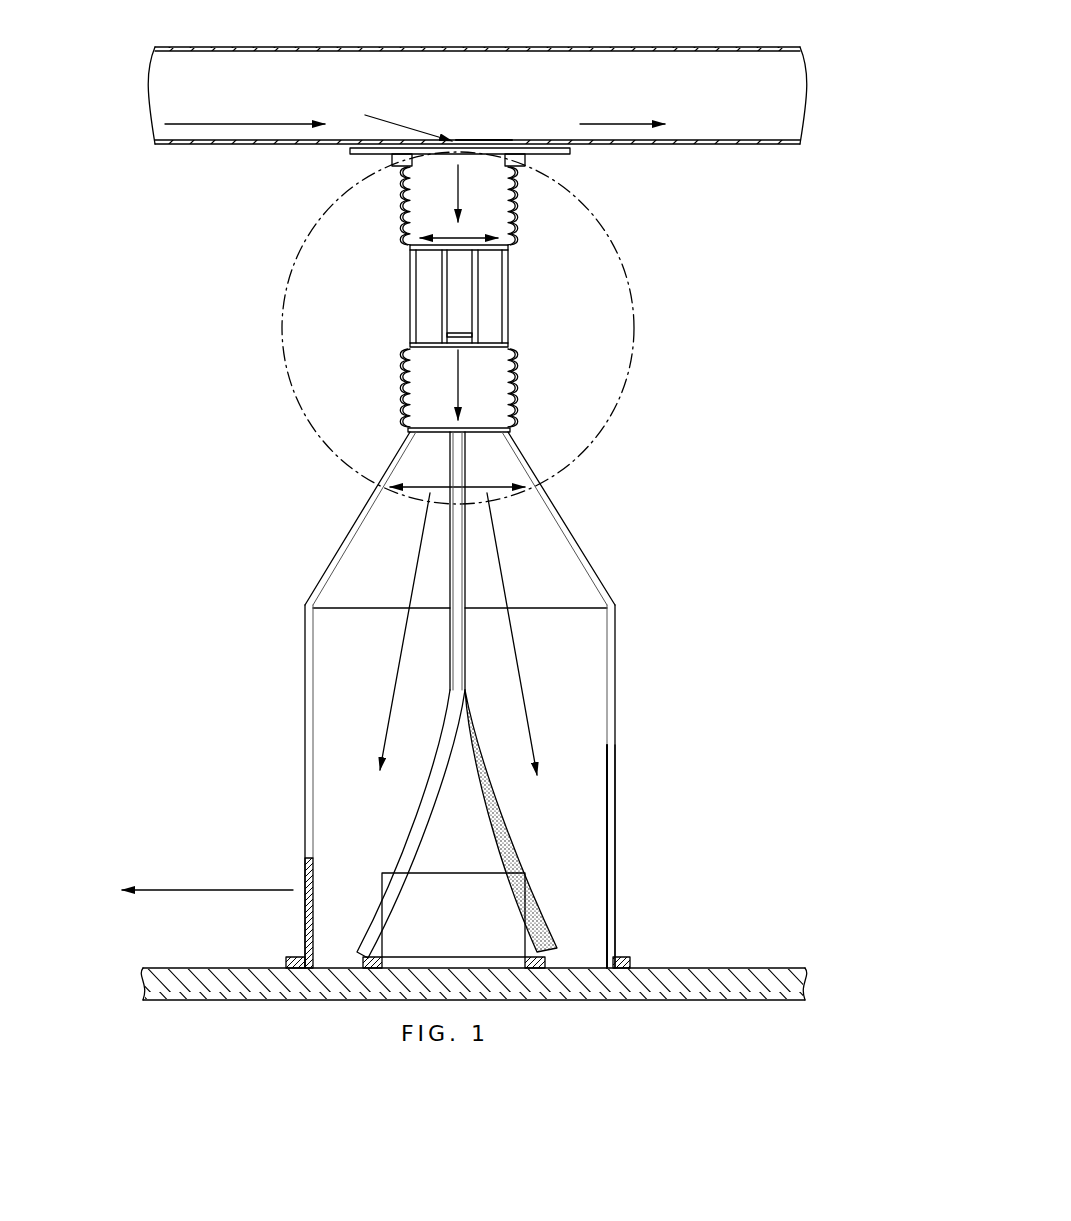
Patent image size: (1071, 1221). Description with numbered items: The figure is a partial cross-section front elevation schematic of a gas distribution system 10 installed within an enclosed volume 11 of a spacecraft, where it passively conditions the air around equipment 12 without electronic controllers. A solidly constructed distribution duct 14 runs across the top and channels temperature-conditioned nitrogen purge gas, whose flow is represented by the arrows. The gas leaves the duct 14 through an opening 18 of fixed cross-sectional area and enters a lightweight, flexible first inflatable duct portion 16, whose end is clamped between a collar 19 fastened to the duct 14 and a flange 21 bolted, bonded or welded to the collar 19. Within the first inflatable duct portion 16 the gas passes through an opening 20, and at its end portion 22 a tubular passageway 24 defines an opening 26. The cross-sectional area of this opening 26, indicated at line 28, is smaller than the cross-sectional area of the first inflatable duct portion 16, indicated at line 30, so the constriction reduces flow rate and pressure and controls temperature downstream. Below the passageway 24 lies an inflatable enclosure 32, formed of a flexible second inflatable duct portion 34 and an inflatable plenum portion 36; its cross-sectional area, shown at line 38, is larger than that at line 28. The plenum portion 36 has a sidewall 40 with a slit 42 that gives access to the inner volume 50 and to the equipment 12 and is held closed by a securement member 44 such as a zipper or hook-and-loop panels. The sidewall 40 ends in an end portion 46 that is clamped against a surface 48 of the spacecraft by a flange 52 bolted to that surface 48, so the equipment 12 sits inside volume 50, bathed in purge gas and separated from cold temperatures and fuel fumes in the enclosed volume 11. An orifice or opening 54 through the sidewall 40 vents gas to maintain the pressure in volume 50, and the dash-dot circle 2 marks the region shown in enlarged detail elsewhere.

The gas distribution system 10 is at (477, 92).
The distribution duct 14 is at (660, 146).
The opening 18 is at (477, 136).
The collar 19 is at (350, 154).
The flange 21 is at (527, 164).
The detail circle (FIG. 2 region) 2 is at (633, 238).
The enclosed volume 11 is at (444, 566).
The first inflatable duct portion 16 is at (407, 218).
The opening 20 is at (481, 201).
The end portion 22 is at (521, 233).
The line 30 is at (462, 237).
The passageway 24 is at (480, 292).
The opening 26 is at (446, 280).
The line 28 is at (463, 333).
The second inflatable duct portion 34 is at (406, 360).
The inflatable enclosure 32 is at (529, 432).
The inflatable plenum portion 36 is at (586, 545).
The line 38 is at (478, 485).
The sidewall 40 is at (345, 726).
The securement member 44 is at (421, 810).
The slit 42 is at (469, 792).
The volume 50 is at (448, 823).
The opening 54 is at (303, 880).
The end portion 46 is at (610, 941).
The equipment 12 is at (465, 920).
The flange 52 is at (293, 955).
The surface 48 is at (210, 967).